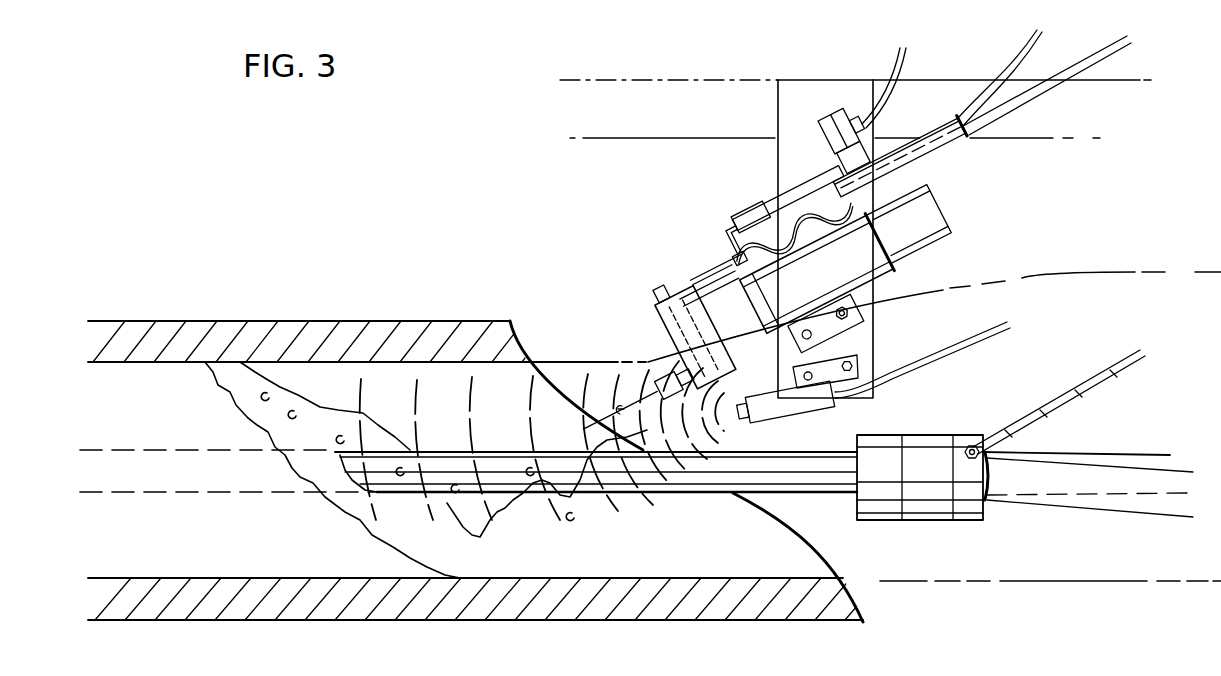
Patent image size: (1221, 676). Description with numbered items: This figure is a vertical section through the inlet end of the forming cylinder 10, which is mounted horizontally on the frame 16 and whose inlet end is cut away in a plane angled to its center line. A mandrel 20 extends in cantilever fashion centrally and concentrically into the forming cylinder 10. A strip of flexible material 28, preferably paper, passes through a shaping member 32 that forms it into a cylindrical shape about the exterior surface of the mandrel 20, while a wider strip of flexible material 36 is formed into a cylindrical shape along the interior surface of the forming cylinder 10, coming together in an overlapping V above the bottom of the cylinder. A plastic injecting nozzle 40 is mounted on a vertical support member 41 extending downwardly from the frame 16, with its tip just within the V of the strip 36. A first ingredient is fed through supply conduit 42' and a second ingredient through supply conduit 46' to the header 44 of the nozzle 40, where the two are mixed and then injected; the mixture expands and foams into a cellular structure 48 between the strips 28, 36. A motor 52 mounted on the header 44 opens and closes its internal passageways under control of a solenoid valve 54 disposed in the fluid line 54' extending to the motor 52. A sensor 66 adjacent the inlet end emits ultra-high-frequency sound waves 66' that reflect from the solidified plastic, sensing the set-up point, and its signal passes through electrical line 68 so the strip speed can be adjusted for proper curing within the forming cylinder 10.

The forming cylinder 10 is at (392, 321).
The frame 16 is at (744, 79).
The mandrel 20 is at (180, 449).
The strip of flexible material 28 is at (1103, 510).
The shaping member 32 is at (945, 521).
The wider strip of flexible material 36 is at (1158, 272).
The plastic injecting nozzle 40 is at (665, 374).
The vertical support member 41 is at (778, 152).
The supply conduit 42' is at (847, 157).
The header 44 is at (658, 310).
The supply conduit 46' is at (905, 171).
The cellular structure 48 is at (278, 397).
The motor 52 is at (893, 267).
The solenoid valve 54 is at (831, 139).
The fluid line 54' is at (811, 161).
The sensor 66 is at (788, 411).
The sound waves 66' is at (542, 459).
The electrical line 68 is at (993, 337).